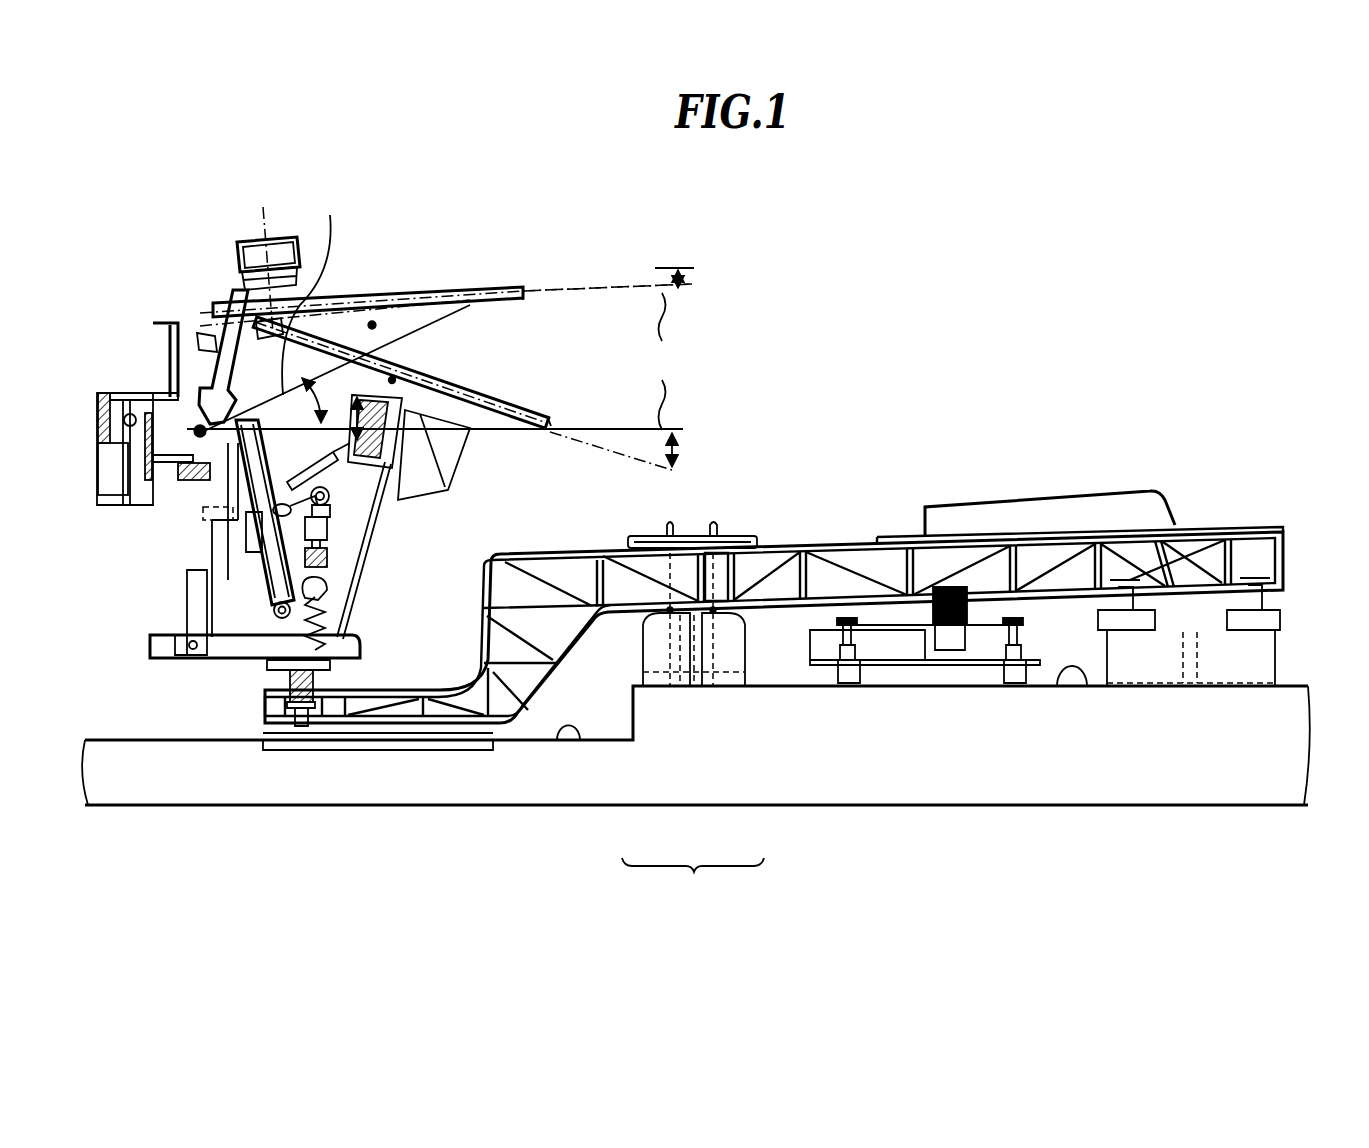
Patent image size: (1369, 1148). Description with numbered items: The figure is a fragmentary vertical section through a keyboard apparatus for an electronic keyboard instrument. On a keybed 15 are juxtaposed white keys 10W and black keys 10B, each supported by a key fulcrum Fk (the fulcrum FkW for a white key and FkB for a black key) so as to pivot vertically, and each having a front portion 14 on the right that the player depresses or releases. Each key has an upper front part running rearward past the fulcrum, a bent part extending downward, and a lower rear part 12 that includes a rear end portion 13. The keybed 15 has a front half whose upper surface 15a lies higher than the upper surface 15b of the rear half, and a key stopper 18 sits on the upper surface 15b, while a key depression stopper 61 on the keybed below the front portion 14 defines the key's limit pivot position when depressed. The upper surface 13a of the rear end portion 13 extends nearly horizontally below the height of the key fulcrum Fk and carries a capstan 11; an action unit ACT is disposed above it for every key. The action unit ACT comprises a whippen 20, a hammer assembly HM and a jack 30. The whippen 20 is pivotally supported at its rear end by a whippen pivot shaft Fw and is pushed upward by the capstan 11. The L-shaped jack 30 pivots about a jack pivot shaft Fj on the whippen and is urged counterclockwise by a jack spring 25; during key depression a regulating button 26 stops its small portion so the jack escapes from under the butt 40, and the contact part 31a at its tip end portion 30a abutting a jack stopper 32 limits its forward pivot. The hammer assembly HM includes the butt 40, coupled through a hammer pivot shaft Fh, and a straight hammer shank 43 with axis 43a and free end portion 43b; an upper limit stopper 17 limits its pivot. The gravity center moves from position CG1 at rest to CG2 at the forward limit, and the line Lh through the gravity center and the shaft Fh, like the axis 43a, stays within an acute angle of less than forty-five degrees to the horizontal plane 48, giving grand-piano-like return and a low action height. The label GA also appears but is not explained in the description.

The black key 10B is at (1158, 482).
The white key 10W is at (1271, 518).
The capstan 11 is at (290, 680).
The lower rear part 12 is at (376, 752).
The rear end portion 13 is at (345, 715).
The upper surface of the rear end portion 13a is at (372, 700).
The front portion 14 is at (1226, 535).
The keybed 15 is at (948, 800).
The upper surface of the front half of the keybed 15a is at (1082, 690).
The upper surface of the rear half of the keybed 15b is at (566, 740).
The upper limit stopper 17 is at (238, 284).
The key stopper 18 is at (277, 733).
The whippen 20 is at (350, 640).
The jack spring 25 is at (312, 597).
The regulating button 26 is at (332, 552).
The jack 30 is at (253, 553).
The tip end portion of the jack 30a is at (200, 468).
The contact part 31a is at (310, 462).
The jack stopper 32 is at (345, 500).
The butt 40 is at (318, 335).
The hammer shank 43 is at (423, 287).
The axis of the hammer shank 43a is at (463, 291).
The free end portion of the hammer shank 43b is at (527, 290).
The horizontal plane 48 is at (508, 466).
The key depression stopper 61 is at (1280, 620).
The action unit ACT is at (165, 630).
The gravity center position in the non-key-depression state CG1 is at (396, 380).
The gravity center position at the forward pivot limit CG2 is at (378, 325).
The hammer pivot shaft Fh is at (200, 438).
The jack pivot shaft Fj is at (273, 613).
The key fulcrum Fk is at (693, 878).
The key fulcrum of the black key FkB is at (662, 690).
The key fulcrum of the white key FkW is at (716, 690).
The whippen pivot shaft Fw is at (192, 650).
The gap GA is at (211, 540).
The hammer assembly HM is at (214, 325).
The straight line through the gravity center and hammer pivot shaft Lh is at (313, 290).